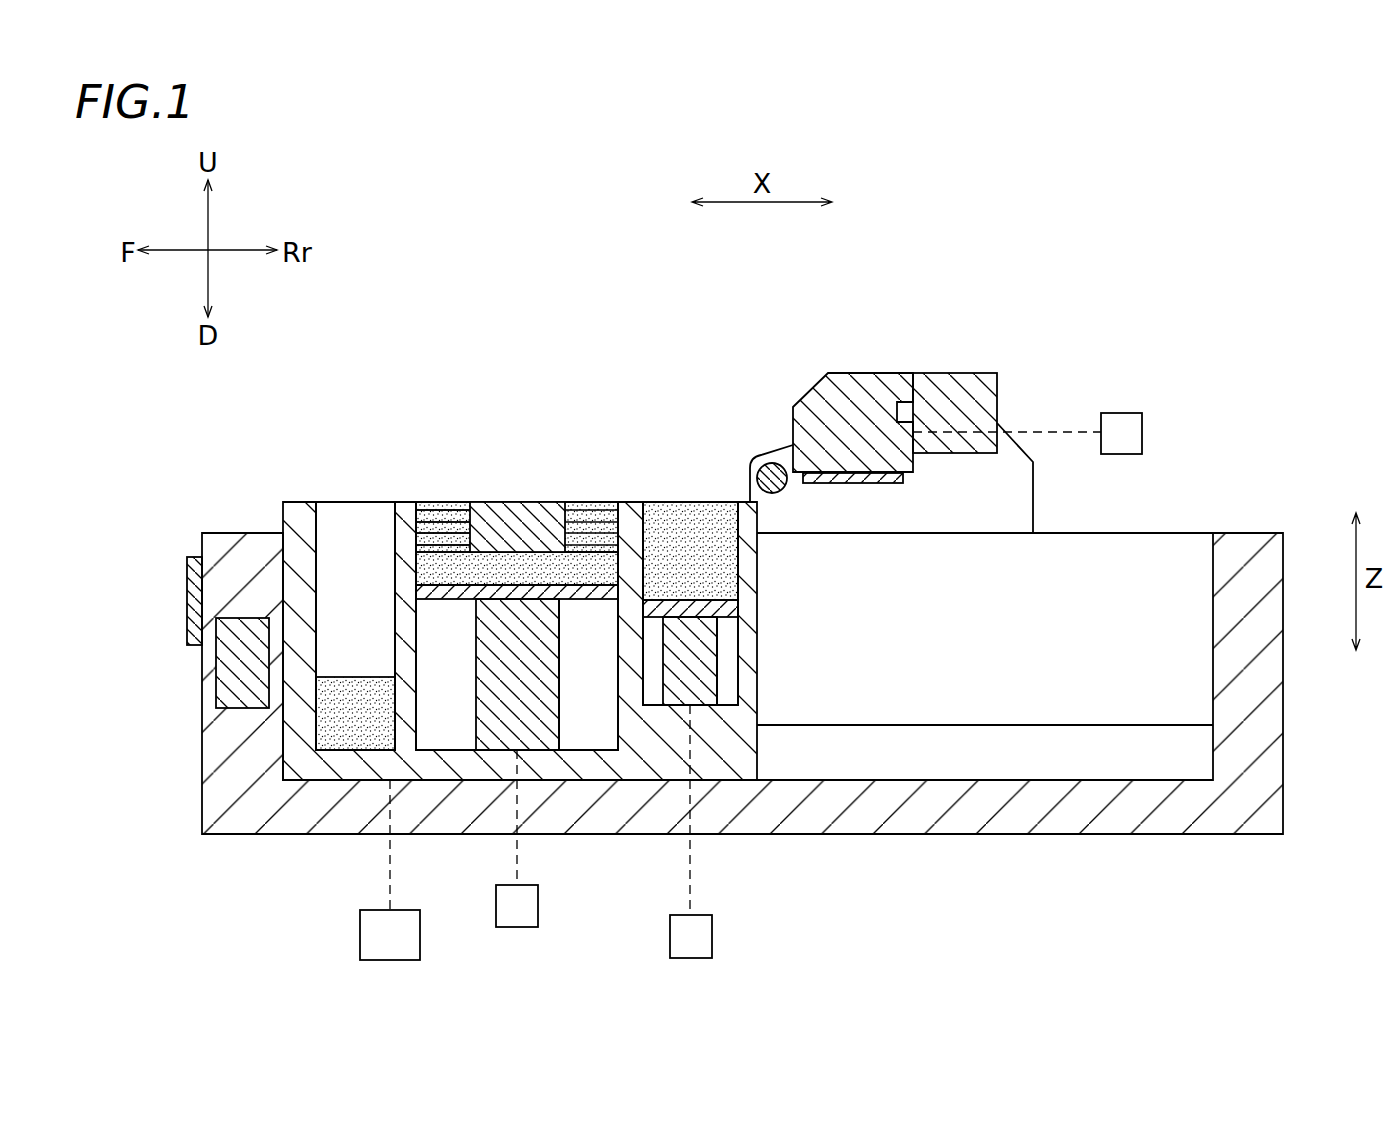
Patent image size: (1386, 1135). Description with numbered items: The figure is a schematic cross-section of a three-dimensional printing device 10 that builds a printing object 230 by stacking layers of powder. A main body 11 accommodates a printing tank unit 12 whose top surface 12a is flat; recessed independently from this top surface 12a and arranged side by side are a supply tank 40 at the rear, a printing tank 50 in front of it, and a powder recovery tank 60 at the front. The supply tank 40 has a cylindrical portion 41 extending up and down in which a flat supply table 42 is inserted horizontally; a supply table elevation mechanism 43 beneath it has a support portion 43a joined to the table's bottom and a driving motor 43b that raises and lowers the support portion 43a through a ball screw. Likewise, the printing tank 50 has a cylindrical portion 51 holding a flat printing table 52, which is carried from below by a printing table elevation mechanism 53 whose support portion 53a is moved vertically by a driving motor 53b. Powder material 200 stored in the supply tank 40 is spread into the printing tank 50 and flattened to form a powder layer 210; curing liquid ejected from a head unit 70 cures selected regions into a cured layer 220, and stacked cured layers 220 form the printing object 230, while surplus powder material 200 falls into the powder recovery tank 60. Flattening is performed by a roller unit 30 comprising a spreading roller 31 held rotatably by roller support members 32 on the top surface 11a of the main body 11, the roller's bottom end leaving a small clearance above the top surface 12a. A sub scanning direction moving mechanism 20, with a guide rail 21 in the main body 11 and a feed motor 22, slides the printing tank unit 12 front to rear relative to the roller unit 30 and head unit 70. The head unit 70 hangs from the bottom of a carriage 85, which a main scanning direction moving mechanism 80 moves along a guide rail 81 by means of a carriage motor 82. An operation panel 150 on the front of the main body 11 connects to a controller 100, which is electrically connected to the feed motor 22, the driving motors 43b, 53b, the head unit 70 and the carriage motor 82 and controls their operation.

The three-dimensional printing device 10 is at (1276, 333).
The main body 11 is at (192, 805).
The top surface of main body 11a is at (225, 533).
The printing tank unit 12 is at (273, 520).
The top surface of printing tank unit 12a is at (291, 498).
The sub scanning direction moving mechanism 20 is at (443, 958).
The guide rail 21 is at (1130, 755).
The feed motor 22 is at (360, 945).
The roller unit 30 is at (746, 367).
The spreading roller 31 is at (777, 463).
The roller support member 32 is at (756, 460).
The supply tank 40 is at (677, 480).
The cylindrical portion 41 is at (655, 505).
The supply table 42 is at (742, 610).
The supply table elevation mechanism 43 is at (732, 662).
The support portion 43a is at (722, 680).
The driving motor 43b is at (712, 945).
The printing tank 50 is at (562, 477).
The cylindrical portion 51 is at (592, 510).
The printing table 52 is at (452, 600).
The printing table elevation mechanism 53 is at (573, 713).
The support portion 53a is at (560, 742).
The driving motor 53b is at (538, 915).
The powder recovery tank 60 is at (335, 487).
The head unit 70 is at (880, 498).
The main scanning direction moving mechanism 80 is at (970, 347).
The guide rail 81 is at (992, 398).
The carriage motor 82 is at (1143, 432).
The carriage 85 is at (848, 385).
The controller 100 is at (216, 690).
The operation panel 150 is at (185, 622).
The powder material 200 is at (342, 690).
The powder layer 210 is at (452, 502).
The cured layer 220 is at (545, 502).
The printing object 230 is at (505, 500).